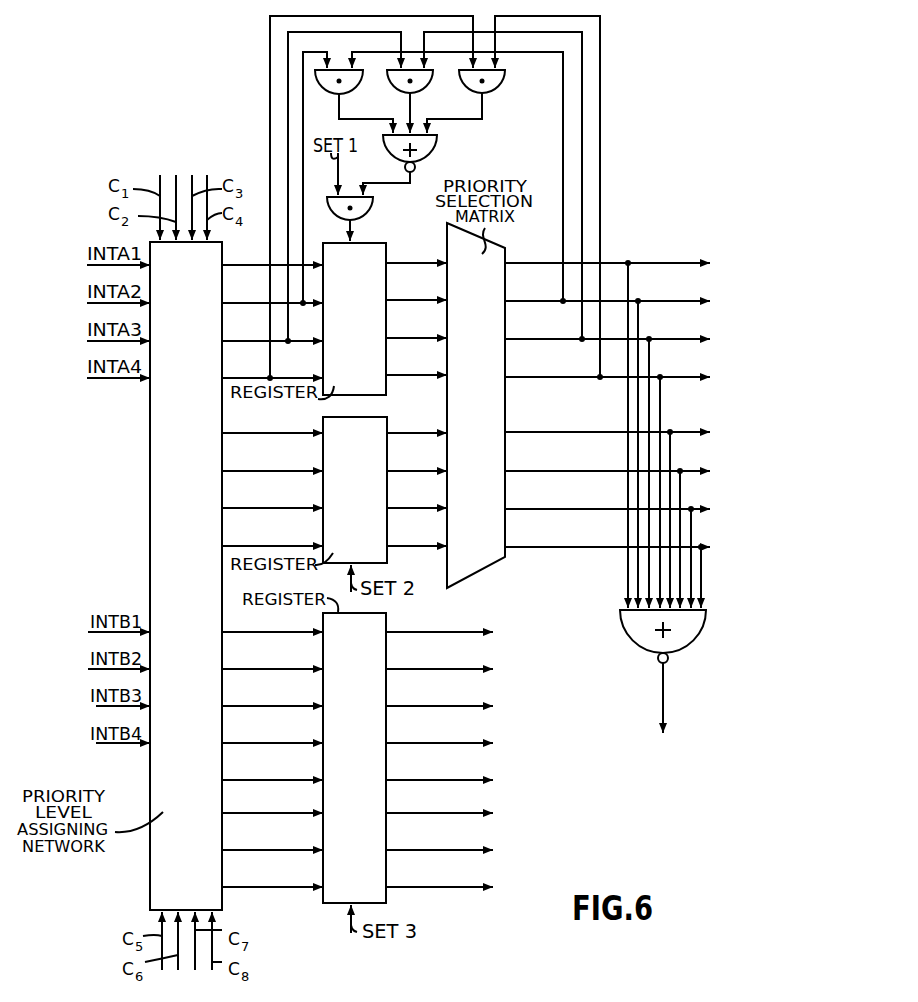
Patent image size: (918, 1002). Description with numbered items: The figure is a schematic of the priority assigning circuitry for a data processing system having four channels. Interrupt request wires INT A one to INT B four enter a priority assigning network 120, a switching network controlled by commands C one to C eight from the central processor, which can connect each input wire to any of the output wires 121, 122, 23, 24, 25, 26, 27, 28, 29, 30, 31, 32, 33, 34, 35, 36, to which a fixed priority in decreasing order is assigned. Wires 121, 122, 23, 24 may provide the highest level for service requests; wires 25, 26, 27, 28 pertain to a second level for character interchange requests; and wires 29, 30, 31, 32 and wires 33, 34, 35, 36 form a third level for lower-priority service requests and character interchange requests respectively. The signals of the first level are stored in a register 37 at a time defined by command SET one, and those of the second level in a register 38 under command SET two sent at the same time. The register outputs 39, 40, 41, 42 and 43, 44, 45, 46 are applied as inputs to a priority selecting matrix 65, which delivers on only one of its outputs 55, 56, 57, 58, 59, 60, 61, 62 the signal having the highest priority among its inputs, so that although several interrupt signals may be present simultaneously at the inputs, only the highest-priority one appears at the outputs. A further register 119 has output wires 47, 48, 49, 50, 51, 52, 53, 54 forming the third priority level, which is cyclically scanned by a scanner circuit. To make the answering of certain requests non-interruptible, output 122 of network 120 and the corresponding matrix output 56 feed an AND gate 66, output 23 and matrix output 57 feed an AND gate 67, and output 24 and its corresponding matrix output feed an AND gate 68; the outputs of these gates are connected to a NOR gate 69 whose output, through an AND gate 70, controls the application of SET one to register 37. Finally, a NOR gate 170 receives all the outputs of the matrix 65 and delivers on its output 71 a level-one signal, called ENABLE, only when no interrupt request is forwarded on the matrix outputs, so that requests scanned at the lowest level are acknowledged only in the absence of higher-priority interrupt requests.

The priority assigning network 120 is at (150, 500).
The output wire 121 is at (267, 262).
The output wire 122 is at (267, 300).
The output wire 23 is at (267, 338).
The output wire 24 is at (267, 375).
The output wire 25 is at (268, 431).
The output wire 26 is at (268, 469).
The output wire 27 is at (268, 506).
The output wire 28 is at (268, 544).
The output wire 29 is at (276, 630).
The output wire 30 is at (276, 667).
The output wire 31 is at (276, 704).
The output wire 32 is at (276, 741).
The output wire 33 is at (276, 778).
The output wire 34 is at (276, 811).
The output wire 35 is at (276, 848).
The output wire 36 is at (276, 885).
The register 37 is at (388, 250).
The register 38 is at (388, 423).
The register 119 is at (326, 904).
The register output 39 is at (408, 262).
The register output 40 is at (428, 299).
The register output 41 is at (428, 337).
The register output 42 is at (428, 374).
The register output 43 is at (411, 428).
The register output 44 is at (429, 469).
The register output 45 is at (429, 507).
The register output 46 is at (429, 545).
The output wire 47 is at (433, 630).
The output wire 48 is at (433, 667).
The output wire 49 is at (433, 704).
The output wire 50 is at (433, 741).
The output wire 51 is at (433, 778).
The output wire 52 is at (433, 811).
The output wire 53 is at (433, 848).
The output wire 54 is at (433, 885).
The matrix output 55 is at (554, 260).
The matrix output 56 is at (554, 299).
The matrix output 57 is at (554, 337).
The matrix output 58 is at (554, 375).
The matrix output 59 is at (554, 430).
The matrix output 60 is at (554, 469).
The matrix output 61 is at (554, 507).
The matrix output 62 is at (554, 545).
The priority selecting matrix 65 is at (491, 569).
The AND gate 66 is at (325, 92).
The AND gate 67 is at (391, 92).
The AND gate 68 is at (463, 92).
The NOR gate 69 is at (429, 159).
The AND gate 70 is at (371, 208).
The NOR gate 170 is at (627, 636).
The output 71 is at (663, 707).